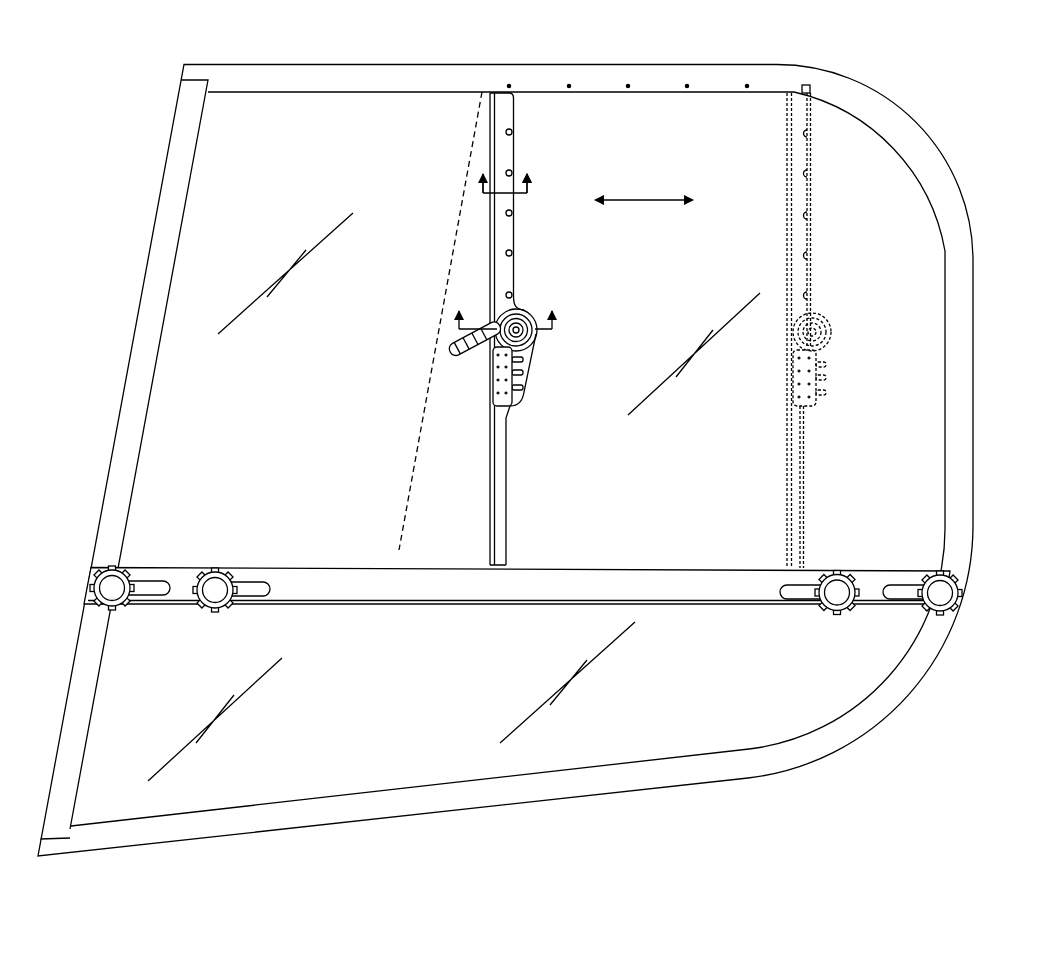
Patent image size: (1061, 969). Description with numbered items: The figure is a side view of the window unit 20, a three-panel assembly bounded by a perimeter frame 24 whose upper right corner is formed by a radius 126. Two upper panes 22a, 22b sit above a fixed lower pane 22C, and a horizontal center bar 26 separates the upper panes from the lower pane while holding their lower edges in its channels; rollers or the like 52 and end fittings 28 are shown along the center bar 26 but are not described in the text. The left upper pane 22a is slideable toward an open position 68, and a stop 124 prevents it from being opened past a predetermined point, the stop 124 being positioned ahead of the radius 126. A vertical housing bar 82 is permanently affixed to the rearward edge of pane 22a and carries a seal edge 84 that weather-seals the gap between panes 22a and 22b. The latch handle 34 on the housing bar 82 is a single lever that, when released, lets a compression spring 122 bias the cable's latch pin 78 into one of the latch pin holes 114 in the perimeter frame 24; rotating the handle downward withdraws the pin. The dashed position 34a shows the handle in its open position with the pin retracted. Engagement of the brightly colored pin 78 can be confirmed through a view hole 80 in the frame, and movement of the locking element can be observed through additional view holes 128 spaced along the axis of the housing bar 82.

The window unit 20 is at (960, 125).
The upper pane 22a is at (288, 133).
The upper pane 22b is at (618, 132).
The lower pane 22C is at (335, 771).
The perimeter frame 24 is at (962, 425).
The center bar 26 is at (577, 583).
The roller assembly 28 is at (122, 570).
The window latch handle 34 is at (492, 375).
The open position of latch handle 34a is at (782, 385).
The rollers 52 is at (155, 575).
The open position 68 is at (475, 132).
The latch pin 78 is at (818, 88).
The view hole 80 is at (567, 84).
The housing bar 82 is at (507, 470).
The seal edge 84 is at (487, 487).
The latch pin hole 114 is at (806, 85).
The compression spring 122 is at (493, 390).
The stop 124 is at (880, 570).
The radius 126 is at (887, 142).
The view holes 128 is at (513, 253).